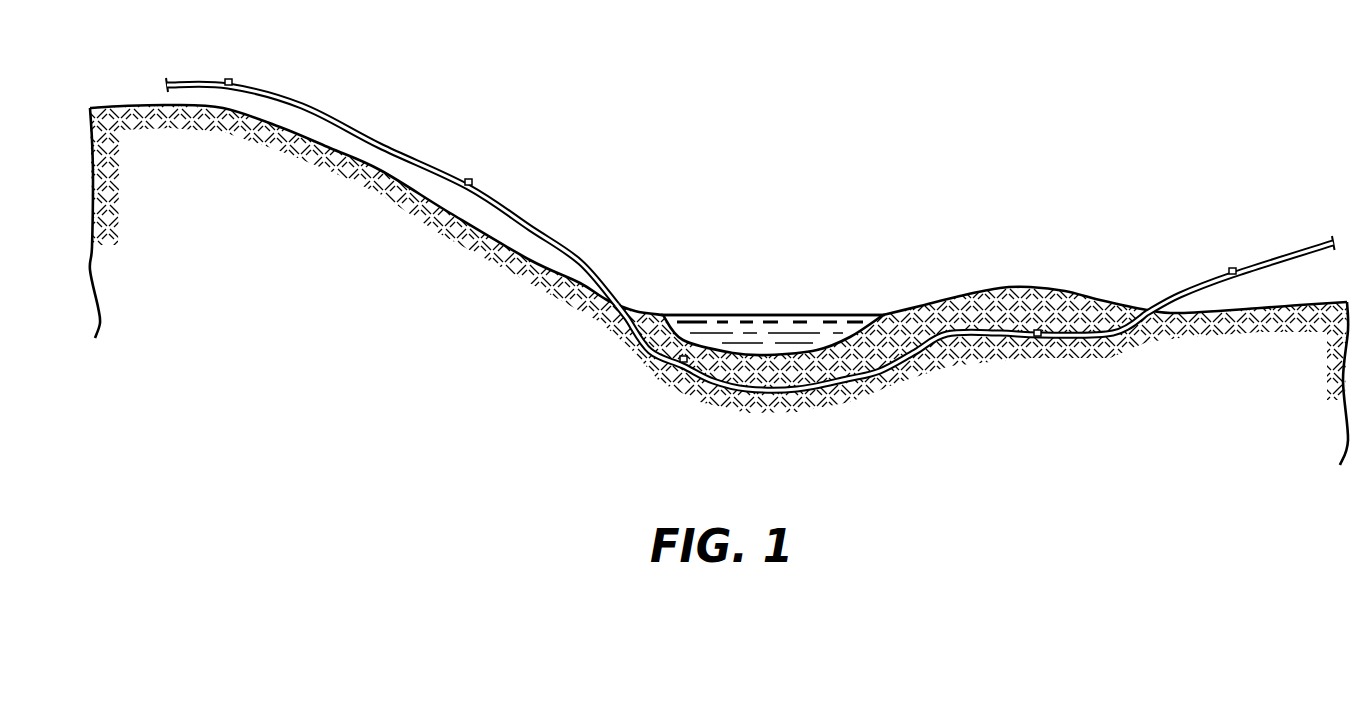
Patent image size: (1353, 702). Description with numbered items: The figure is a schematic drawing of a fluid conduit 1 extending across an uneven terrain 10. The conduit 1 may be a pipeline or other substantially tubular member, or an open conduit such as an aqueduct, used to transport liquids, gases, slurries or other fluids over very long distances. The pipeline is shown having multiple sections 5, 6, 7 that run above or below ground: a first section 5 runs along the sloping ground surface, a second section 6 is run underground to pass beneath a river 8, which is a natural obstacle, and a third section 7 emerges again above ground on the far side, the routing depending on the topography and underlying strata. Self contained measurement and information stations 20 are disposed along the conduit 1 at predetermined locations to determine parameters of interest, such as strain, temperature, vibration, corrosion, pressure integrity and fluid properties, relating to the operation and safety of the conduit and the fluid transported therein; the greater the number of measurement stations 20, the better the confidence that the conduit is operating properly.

The fluid conduit 1 is at (423, 122).
The pipeline section 5 is at (302, 104).
The pipeline section 6 is at (797, 391).
The pipeline section 7 is at (1293, 252).
The river 8 is at (762, 322).
The terrain 10 is at (300, 232).
The measurement station 20 is at (229, 80).